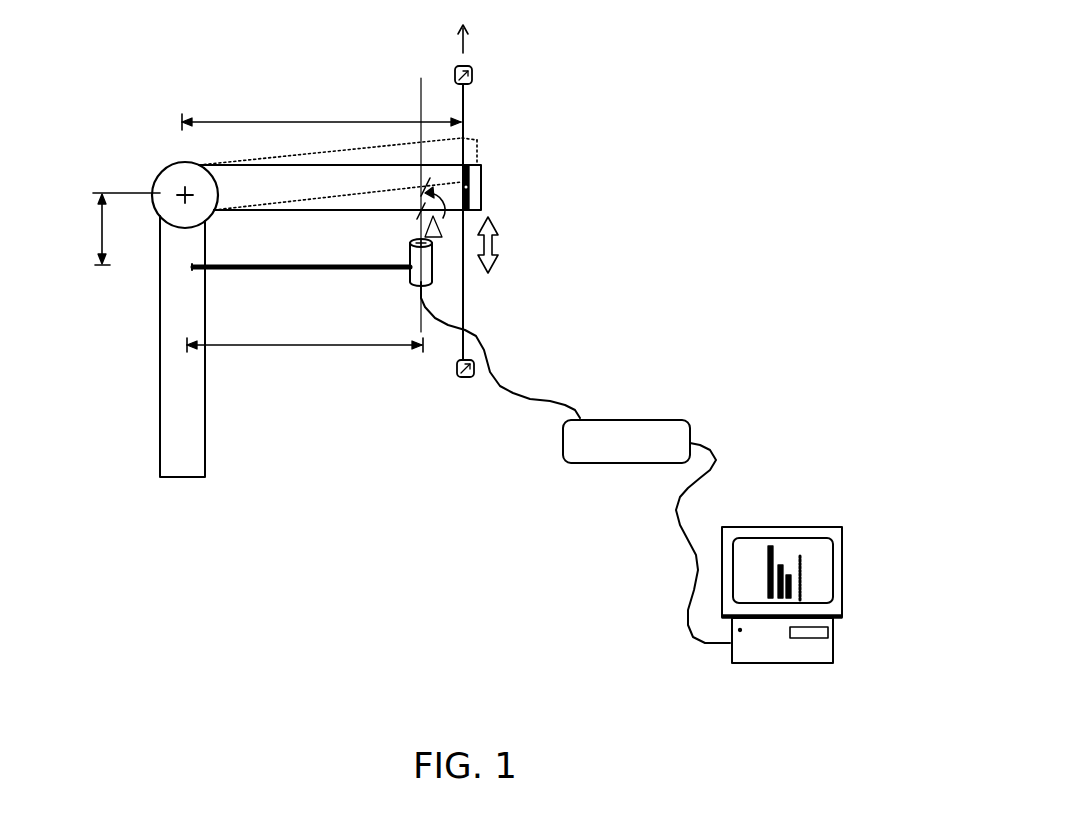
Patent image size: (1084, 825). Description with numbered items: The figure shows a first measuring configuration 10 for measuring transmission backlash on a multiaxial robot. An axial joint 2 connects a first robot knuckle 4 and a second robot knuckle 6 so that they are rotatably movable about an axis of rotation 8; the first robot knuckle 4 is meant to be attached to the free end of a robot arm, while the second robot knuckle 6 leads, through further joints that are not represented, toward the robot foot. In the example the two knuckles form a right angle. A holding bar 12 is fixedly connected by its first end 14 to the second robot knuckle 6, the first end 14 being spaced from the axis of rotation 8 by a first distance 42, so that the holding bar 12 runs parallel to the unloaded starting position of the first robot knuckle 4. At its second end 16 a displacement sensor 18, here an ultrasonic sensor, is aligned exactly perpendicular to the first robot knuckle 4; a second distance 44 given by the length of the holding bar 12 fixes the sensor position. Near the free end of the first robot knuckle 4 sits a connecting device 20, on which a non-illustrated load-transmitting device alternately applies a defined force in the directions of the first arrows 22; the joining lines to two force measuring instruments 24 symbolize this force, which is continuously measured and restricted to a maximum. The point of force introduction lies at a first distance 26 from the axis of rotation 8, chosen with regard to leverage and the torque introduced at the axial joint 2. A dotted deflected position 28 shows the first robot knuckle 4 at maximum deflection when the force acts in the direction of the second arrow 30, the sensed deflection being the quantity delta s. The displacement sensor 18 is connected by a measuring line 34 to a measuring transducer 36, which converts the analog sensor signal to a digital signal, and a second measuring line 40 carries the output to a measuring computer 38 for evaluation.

The axial joint 2 is at (170, 202).
The first robot knuckle 4 is at (408, 163).
The second robot knuckle 6 is at (173, 430).
The axis of rotation 8 is at (182, 190).
The first measuring configuration 10 is at (366, 558).
The holding bar 12 is at (273, 272).
The first end 14 is at (192, 268).
The second end 16 is at (405, 272).
The displacement sensor 18 is at (423, 272).
The connecting device 20 is at (470, 172).
The first arrows 22 is at (500, 245).
The force measuring instruments 24 is at (475, 70).
The first distance 26 is at (233, 115).
The deflected position 28 is at (408, 142).
The second arrow 30 is at (490, 34).
The measuring line 34 is at (513, 388).
The measuring transducer 36 is at (618, 432).
The measuring computer 38 is at (823, 648).
The second measuring line 40 is at (680, 517).
The first distance 42 is at (97, 235).
The second distance 44 is at (278, 347).